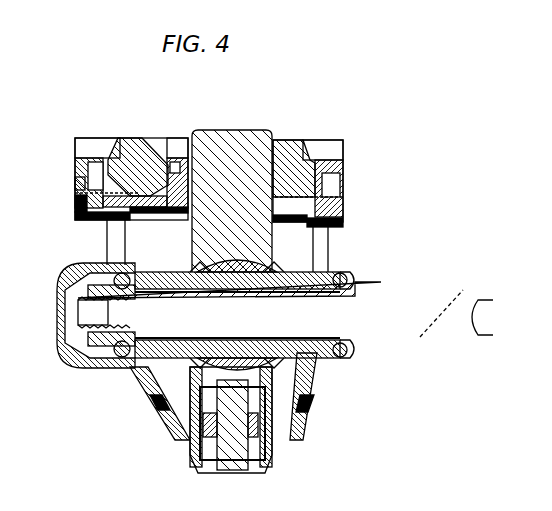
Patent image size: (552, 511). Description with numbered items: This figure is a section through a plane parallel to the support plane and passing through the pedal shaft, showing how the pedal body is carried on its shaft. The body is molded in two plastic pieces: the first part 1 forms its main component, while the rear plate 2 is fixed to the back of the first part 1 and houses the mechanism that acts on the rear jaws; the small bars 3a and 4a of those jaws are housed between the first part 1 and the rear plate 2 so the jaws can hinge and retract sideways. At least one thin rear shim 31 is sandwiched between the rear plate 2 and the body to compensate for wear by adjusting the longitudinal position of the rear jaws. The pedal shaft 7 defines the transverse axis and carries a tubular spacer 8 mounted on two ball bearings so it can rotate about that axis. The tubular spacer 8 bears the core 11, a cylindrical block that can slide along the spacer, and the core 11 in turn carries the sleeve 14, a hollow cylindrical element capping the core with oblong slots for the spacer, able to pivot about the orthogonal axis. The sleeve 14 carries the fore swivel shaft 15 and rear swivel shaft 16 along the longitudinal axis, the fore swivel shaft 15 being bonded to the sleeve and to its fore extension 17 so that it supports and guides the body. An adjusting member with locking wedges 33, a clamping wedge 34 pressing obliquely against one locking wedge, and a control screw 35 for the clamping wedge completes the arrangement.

The first part of the pedal body 1 is at (125, 222).
The rear plate 2 is at (118, 158).
The small bar 3a is at (75, 187).
The small bar 4a is at (343, 185).
The pedal shaft 7 is at (420, 337).
The tubular spacer 8 is at (298, 353).
The core 11 is at (260, 257).
The sleeve 14 is at (180, 367).
The fore swivel shaft 15 is at (232, 462).
The rear swivel shaft 16 is at (262, 142).
The extension 17 is at (273, 458).
The rear shim 31 is at (55, 326).
The locking wedge 33 is at (180, 222).
The clamping wedge 34 is at (174, 163).
The control screw 35 is at (140, 160).